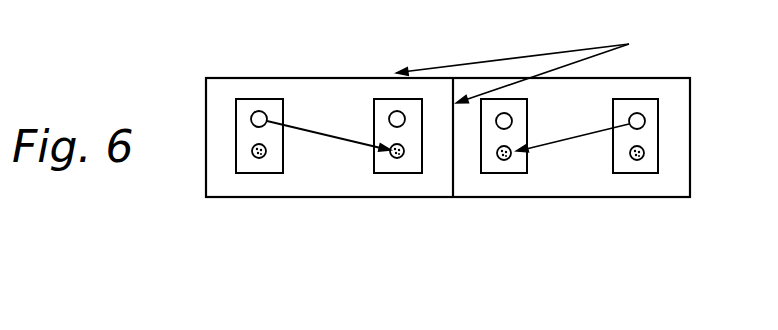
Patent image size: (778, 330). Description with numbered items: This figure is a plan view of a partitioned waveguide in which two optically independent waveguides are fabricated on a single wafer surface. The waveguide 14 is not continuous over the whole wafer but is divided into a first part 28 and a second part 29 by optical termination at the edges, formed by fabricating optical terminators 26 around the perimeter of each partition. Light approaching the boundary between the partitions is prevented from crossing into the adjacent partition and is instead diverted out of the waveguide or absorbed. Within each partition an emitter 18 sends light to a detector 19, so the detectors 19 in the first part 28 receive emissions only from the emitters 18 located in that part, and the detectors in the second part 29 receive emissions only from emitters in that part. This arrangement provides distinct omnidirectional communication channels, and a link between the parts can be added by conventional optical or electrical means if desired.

The waveguide 14 is at (689, 95).
The emitters 18 is at (253, 113).
The detectors 19 is at (254, 157).
The optical terminators 26 is at (526, 69).
The first part 28 is at (338, 112).
The second part 29 is at (583, 117).